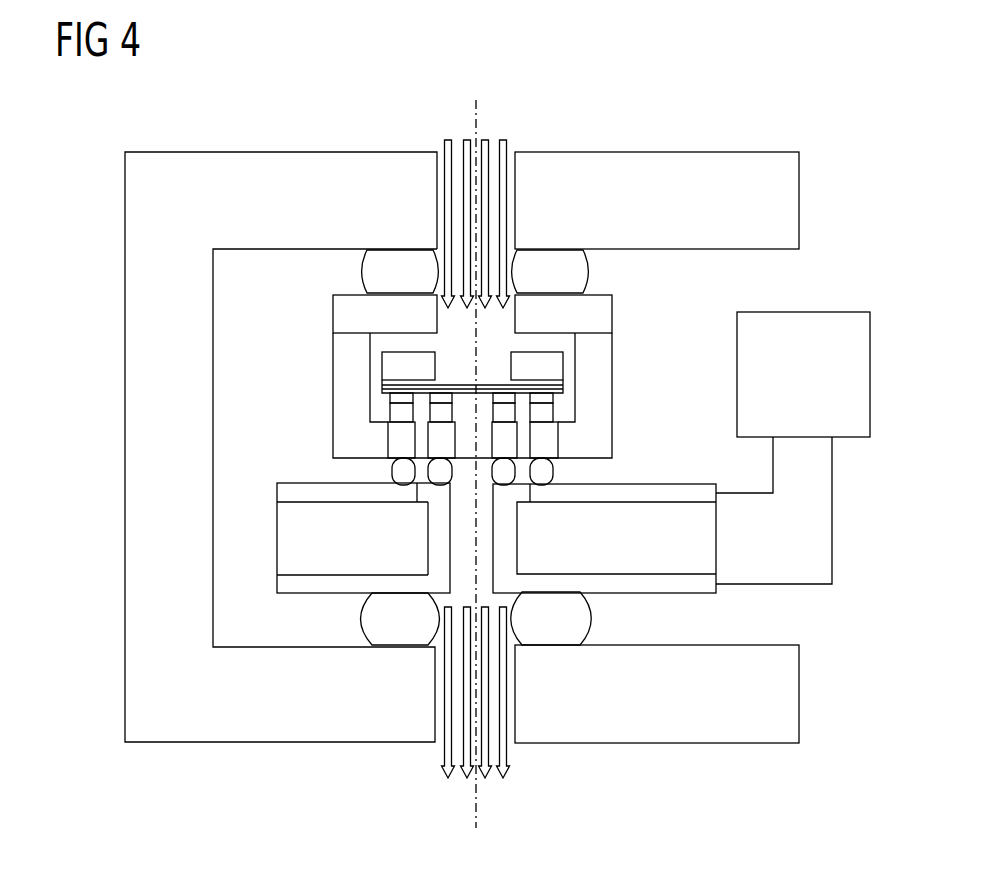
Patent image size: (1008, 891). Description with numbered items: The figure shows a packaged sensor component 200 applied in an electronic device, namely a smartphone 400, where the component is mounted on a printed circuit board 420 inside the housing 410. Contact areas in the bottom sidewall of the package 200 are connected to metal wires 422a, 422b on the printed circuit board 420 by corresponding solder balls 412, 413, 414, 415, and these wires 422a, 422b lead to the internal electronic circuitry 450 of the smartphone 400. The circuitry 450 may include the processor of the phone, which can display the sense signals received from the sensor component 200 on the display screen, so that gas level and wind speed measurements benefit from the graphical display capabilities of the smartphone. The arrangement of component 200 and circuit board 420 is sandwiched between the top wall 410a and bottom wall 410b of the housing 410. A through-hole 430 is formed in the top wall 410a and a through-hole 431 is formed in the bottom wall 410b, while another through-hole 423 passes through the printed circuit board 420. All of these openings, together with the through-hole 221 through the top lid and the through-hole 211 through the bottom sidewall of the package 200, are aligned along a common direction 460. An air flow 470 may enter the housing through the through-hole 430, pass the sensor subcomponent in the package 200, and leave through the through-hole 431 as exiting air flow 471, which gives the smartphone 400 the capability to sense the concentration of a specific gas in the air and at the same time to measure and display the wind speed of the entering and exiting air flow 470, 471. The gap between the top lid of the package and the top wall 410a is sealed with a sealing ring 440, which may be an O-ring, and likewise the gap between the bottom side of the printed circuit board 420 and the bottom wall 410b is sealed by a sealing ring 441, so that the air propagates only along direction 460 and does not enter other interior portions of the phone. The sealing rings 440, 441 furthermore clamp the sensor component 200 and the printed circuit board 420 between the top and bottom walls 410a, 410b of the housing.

The smartphone 400 is at (741, 108).
The housing 410 is at (425, 452).
The top wall 410a is at (282, 152).
The bottom wall 410b is at (264, 742).
The printed circuit board 420 is at (535, 560).
The solder ball 412 is at (398, 488).
The solder ball 413 is at (442, 483).
The solder ball 414 is at (547, 487).
The solder ball 415 is at (508, 488).
The through-hole 423 is at (460, 556).
The metal wire 422a is at (716, 497).
The metal wire 422b is at (716, 590).
The through-hole 430 is at (510, 155).
The through-hole 431 is at (506, 752).
The sealing ring 440 is at (578, 275).
The sealing ring 441 is at (582, 620).
The internal electronic circuitry 450 is at (825, 312).
The direction 460 is at (478, 826).
The air flow 470 is at (443, 152).
The exiting air flow 471 is at (445, 755).
The packaged sensor component 200 is at (477, 390).
The through-hole 221 is at (453, 323).
The through-hole 211 is at (465, 439).